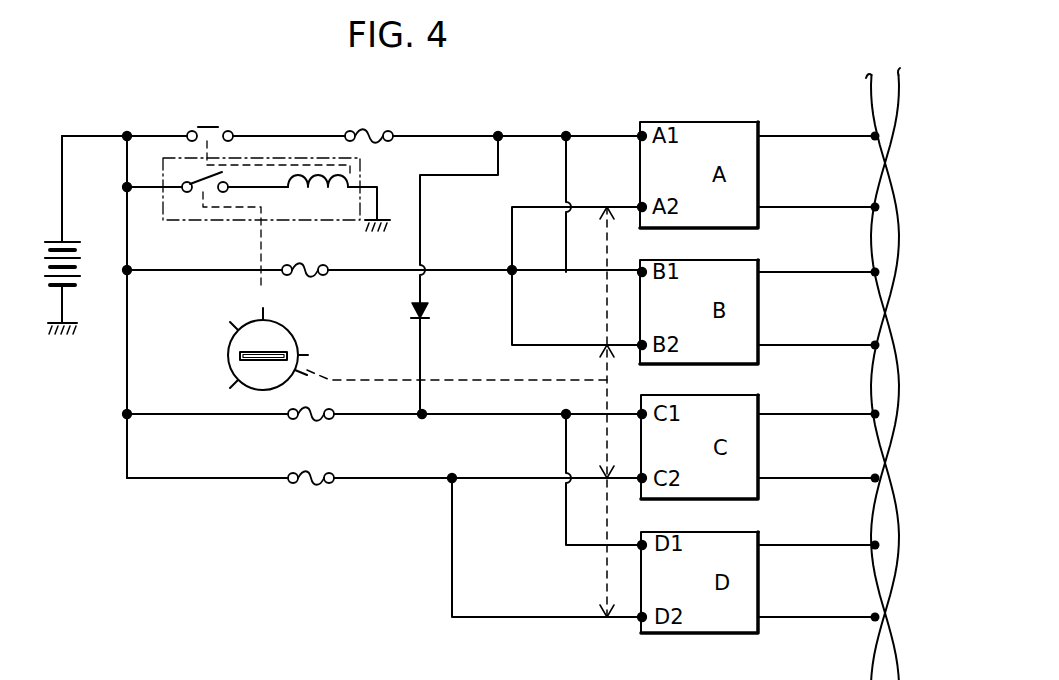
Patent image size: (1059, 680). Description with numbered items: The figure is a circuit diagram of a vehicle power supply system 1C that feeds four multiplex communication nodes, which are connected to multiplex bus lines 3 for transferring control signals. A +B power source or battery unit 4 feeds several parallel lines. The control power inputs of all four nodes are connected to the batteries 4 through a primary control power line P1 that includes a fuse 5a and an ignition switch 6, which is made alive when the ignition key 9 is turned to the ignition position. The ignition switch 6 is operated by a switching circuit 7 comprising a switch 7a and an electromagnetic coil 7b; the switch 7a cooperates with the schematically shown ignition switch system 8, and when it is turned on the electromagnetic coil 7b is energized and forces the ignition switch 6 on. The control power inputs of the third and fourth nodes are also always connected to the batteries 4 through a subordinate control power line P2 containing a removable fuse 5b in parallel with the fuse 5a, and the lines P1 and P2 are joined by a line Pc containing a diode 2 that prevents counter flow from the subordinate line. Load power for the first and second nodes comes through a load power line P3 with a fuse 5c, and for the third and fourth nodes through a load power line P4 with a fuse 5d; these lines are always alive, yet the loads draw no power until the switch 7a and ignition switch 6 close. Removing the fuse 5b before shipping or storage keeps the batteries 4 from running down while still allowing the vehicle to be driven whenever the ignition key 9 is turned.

The power supply system 1C is at (323, 520).
The diode 2 is at (424, 320).
The multiplex bus lines 3 is at (882, 63).
The battery unit 4 is at (87, 260).
The fuse 5a is at (370, 125).
The removable fuse 5b is at (333, 423).
The fuse 5c is at (306, 268).
The fuse 5d is at (333, 487).
The ignition switch 6 is at (215, 125).
The switching circuit 7 is at (260, 213).
The switch 7a is at (192, 193).
The electromagnetic coil 7b is at (349, 181).
The ignition switch system 8 is at (245, 347).
The ignition key 9 is at (262, 362).
The primary control power line P1 is at (480, 134).
The subordinate control power line P2 is at (380, 416).
The load power line P3 is at (480, 268).
The load power line P4 is at (380, 480).
The line Pc is at (425, 337).